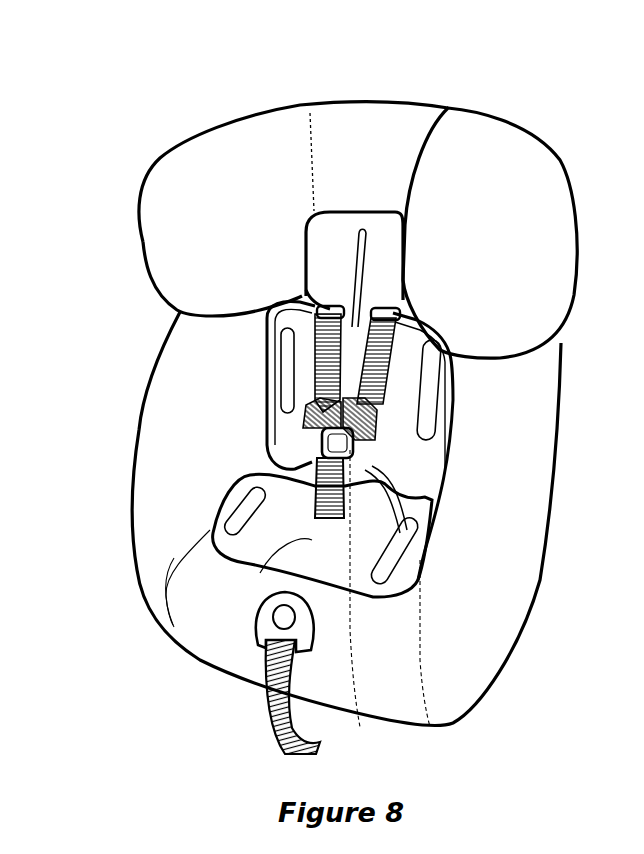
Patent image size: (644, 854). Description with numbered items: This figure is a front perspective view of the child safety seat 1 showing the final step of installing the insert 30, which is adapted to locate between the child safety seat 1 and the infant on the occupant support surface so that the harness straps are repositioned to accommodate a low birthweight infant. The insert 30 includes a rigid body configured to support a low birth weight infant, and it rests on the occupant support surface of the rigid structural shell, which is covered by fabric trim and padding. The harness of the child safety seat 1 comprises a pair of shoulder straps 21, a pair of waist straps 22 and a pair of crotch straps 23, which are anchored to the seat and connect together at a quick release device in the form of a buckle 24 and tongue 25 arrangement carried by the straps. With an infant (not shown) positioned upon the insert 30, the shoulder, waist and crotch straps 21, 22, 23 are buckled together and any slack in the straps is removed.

The child safety seat 1 is at (175, 102).
The insert 30 is at (349, 240).
The shoulder straps 21 is at (313, 350).
The tongue 25 is at (305, 420).
The waist straps 22 is at (300, 436).
The crotch straps 23 is at (300, 497).
The buckle 24 is at (353, 718).